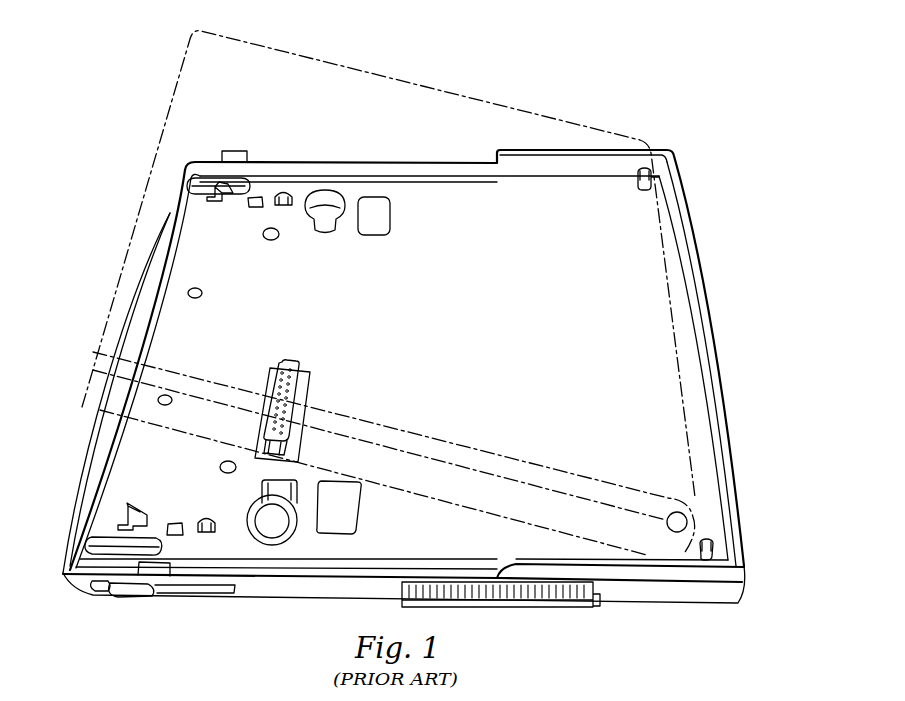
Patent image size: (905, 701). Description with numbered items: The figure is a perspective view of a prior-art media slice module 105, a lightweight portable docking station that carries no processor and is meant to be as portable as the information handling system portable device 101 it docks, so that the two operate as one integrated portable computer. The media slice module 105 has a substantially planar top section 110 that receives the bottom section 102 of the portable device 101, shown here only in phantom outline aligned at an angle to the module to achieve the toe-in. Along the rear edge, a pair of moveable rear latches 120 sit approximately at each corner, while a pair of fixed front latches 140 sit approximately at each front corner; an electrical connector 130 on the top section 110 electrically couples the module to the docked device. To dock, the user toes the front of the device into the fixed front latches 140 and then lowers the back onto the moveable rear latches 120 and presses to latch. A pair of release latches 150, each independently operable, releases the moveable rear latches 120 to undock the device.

The information handling system portable device 101 is at (522, 116).
The bottom section 102 is at (379, 486).
The media slice module 105 is at (706, 322).
The top section 110 is at (127, 442).
The moveable rear latches 120 is at (221, 195).
The electrical connector 130 is at (292, 363).
The fixed front latches 140 is at (707, 561).
The release latches 150 is at (136, 598).